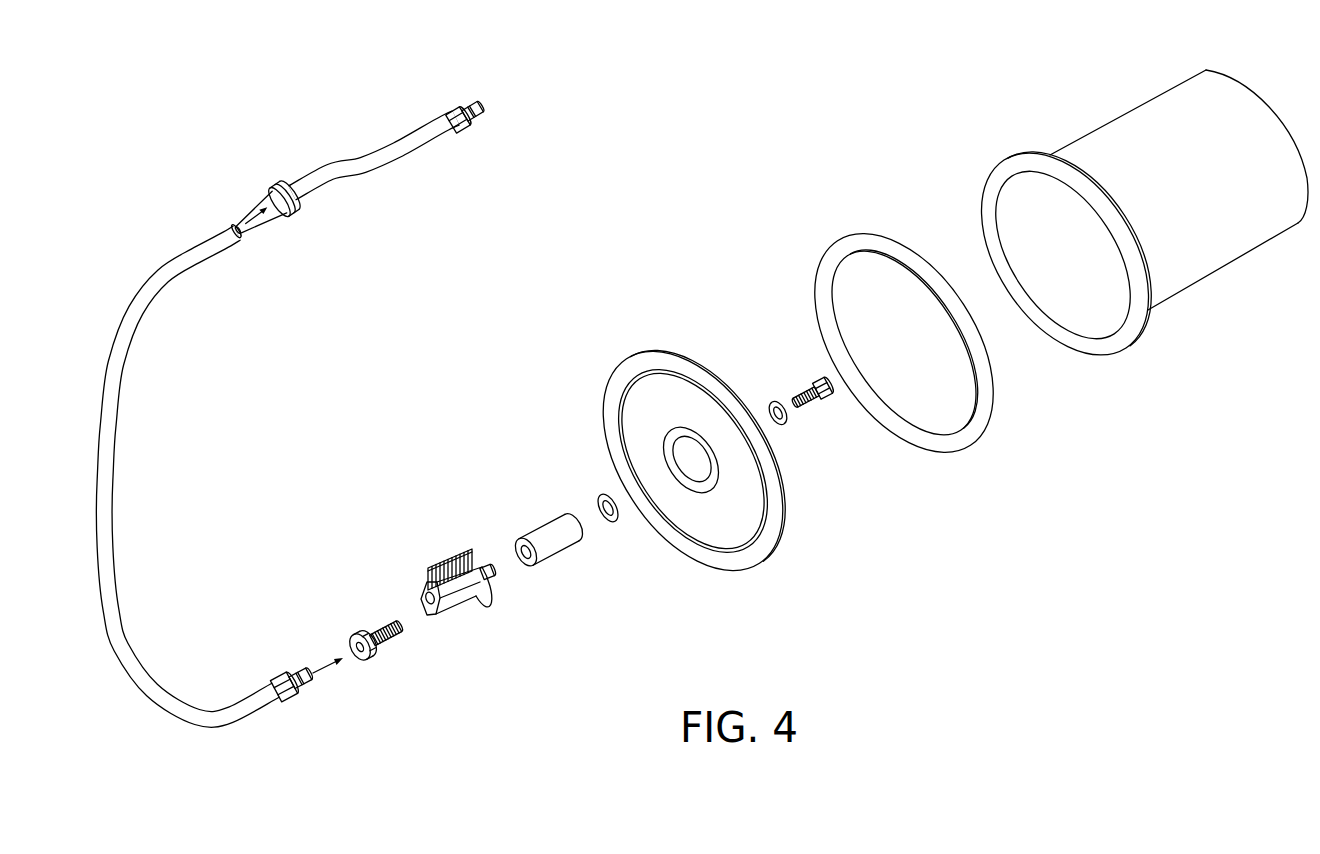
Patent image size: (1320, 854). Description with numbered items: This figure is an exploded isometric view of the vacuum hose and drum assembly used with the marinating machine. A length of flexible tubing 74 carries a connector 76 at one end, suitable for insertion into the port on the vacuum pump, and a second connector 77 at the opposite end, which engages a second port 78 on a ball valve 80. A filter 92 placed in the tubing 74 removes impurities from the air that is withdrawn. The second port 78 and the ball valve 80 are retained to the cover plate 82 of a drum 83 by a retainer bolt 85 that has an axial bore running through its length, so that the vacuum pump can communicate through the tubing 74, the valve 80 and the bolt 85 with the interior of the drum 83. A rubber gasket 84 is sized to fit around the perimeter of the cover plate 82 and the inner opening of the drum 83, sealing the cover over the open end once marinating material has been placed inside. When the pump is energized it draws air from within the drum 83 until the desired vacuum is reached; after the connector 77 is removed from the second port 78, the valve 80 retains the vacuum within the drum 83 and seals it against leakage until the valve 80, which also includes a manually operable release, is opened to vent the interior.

The flexible tubing 74 is at (163, 267).
The connector 76 is at (463, 107).
The second connector 77 is at (293, 699).
The second port 78 is at (379, 660).
The ball valve 80 is at (450, 614).
The cover plate 82 is at (650, 352).
The drum 83 is at (1094, 130).
The rubber gasket 84 is at (863, 233).
The retainer bolt 85 is at (802, 389).
The filter 92 is at (270, 236).